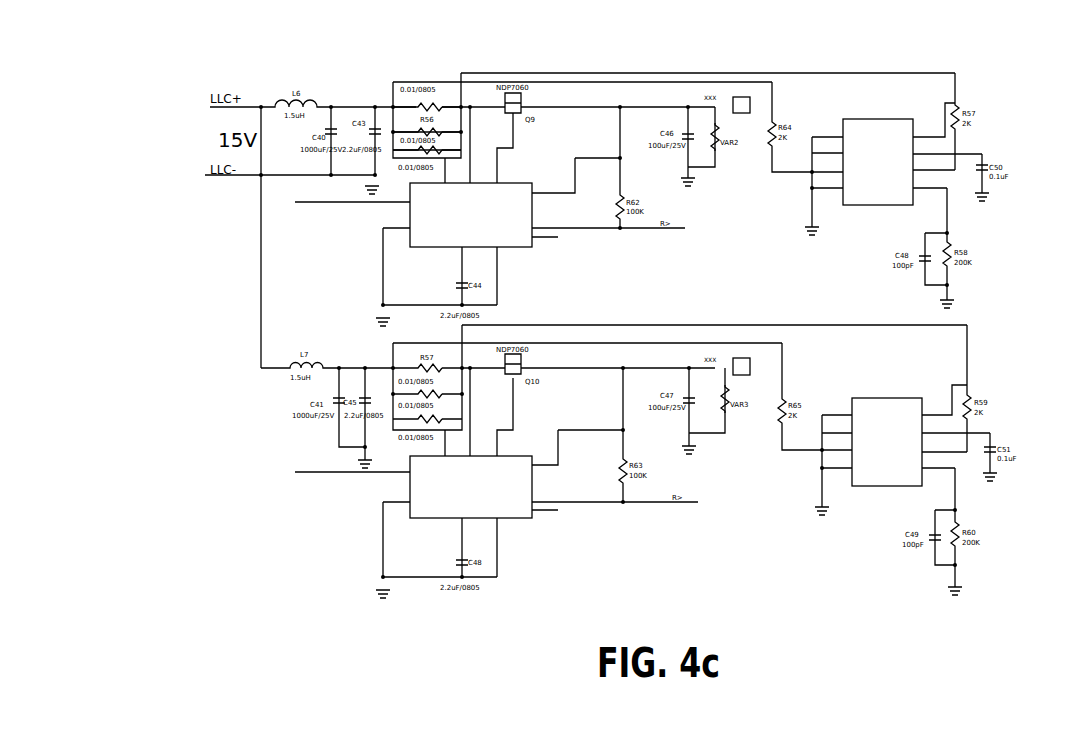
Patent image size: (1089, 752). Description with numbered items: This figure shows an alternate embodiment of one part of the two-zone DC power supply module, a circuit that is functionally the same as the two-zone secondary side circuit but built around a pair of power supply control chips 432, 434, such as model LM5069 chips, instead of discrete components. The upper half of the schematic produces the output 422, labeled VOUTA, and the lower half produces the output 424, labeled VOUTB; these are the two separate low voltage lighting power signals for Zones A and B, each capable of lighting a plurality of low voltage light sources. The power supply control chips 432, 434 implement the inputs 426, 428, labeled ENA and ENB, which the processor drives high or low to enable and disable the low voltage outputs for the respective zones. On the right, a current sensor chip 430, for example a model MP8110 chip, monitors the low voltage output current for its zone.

The output 422 is at (741, 96).
The output 424 is at (741, 357).
The input 426 is at (300, 204).
The input 428 is at (300, 474).
The current sensor chip 430 is at (893, 118).
The power supply control chip 432 is at (526, 249).
The power supply control chip 434 is at (518, 523).